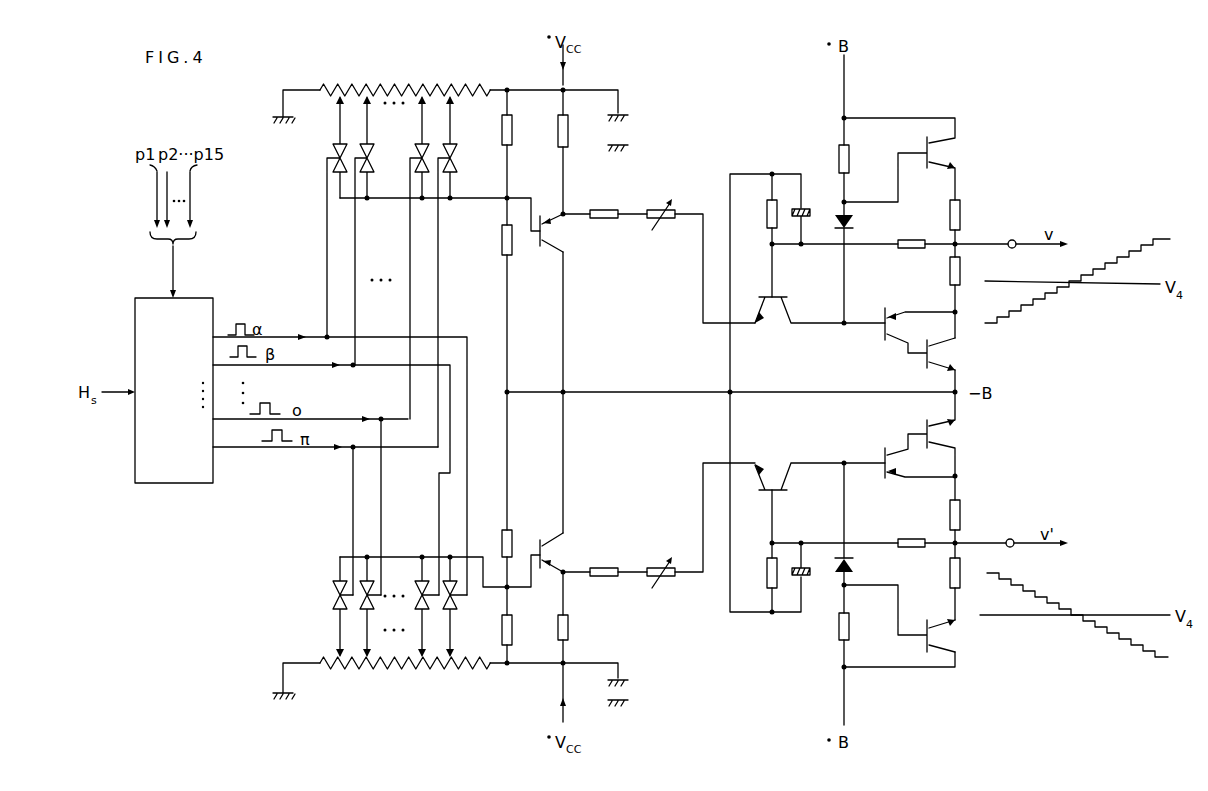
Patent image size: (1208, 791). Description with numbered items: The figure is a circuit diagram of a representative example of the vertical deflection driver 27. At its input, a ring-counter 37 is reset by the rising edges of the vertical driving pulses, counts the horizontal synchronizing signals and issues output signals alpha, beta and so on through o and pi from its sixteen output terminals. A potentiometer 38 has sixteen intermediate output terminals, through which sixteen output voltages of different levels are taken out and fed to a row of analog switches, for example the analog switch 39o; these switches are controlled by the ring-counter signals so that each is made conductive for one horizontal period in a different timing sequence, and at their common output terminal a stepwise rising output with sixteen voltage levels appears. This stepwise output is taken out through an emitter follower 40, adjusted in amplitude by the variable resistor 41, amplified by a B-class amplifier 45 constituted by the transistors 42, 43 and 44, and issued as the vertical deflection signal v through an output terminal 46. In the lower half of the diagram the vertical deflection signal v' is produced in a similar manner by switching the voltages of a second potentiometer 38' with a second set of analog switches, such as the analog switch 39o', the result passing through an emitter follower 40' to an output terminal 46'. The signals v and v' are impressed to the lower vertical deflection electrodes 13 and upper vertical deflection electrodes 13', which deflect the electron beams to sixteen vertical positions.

The vertical deflection driver 27 is at (311, 63).
The ring-counter 37 is at (170, 485).
The potentiometer 38 is at (381, 90).
The potentiometer 38' is at (381, 680).
The analog switch 39o is at (402, 257).
The analog switch 39o' is at (412, 607).
The emitter follower 40 is at (567, 236).
The emitter follower 40' is at (567, 554).
The variable resistor 41 is at (656, 206).
The transistor 42 is at (773, 300).
The transistor 43 is at (904, 300).
The transistor 44 is at (940, 152).
The B-class amplifier 45 is at (818, 163).
The output terminal 46 is at (1020, 230).
The output terminal 46' is at (1014, 529).
The lower vertical deflection electrode 13 is at (1054, 246).
The upper vertical deflection electrode 13' is at (1056, 546).